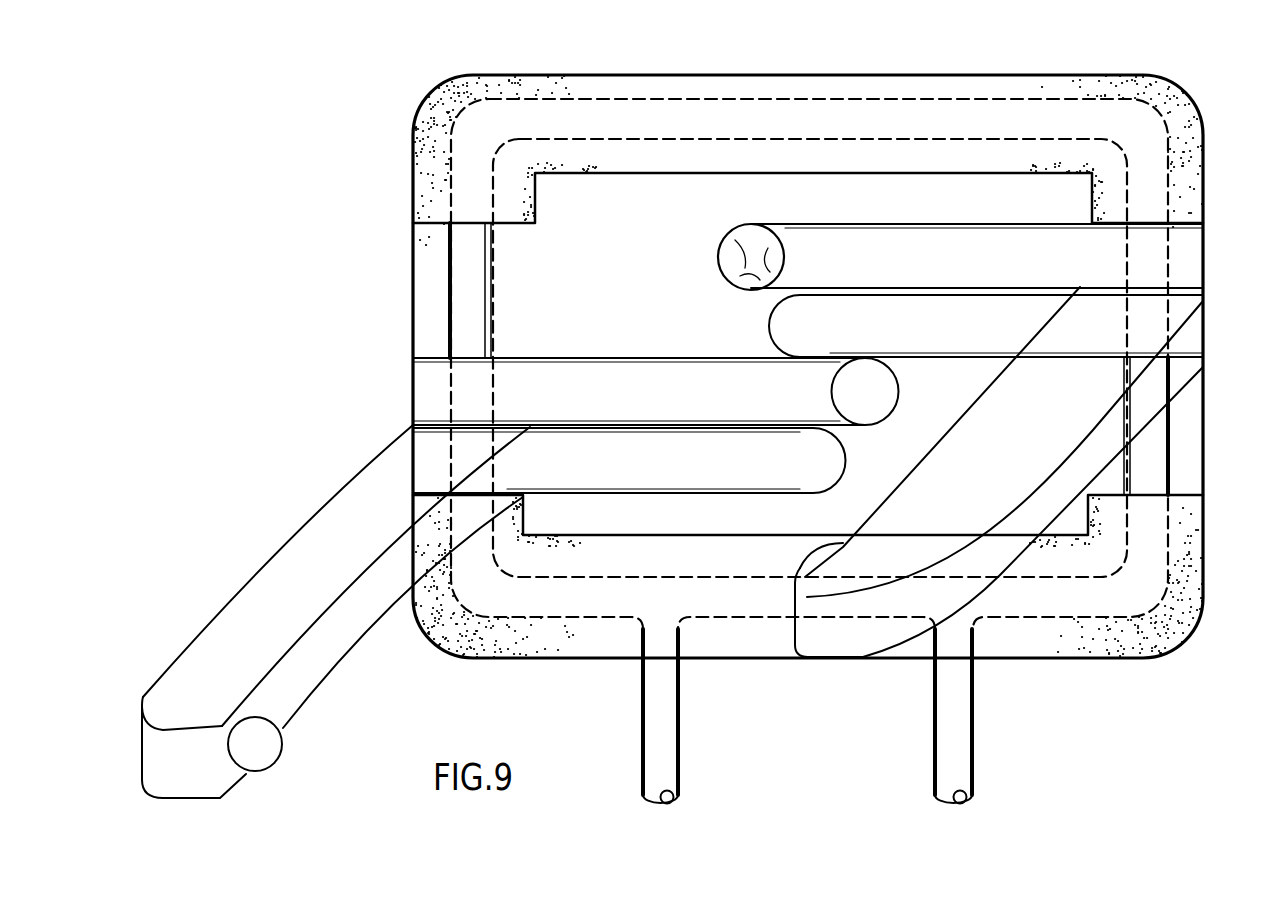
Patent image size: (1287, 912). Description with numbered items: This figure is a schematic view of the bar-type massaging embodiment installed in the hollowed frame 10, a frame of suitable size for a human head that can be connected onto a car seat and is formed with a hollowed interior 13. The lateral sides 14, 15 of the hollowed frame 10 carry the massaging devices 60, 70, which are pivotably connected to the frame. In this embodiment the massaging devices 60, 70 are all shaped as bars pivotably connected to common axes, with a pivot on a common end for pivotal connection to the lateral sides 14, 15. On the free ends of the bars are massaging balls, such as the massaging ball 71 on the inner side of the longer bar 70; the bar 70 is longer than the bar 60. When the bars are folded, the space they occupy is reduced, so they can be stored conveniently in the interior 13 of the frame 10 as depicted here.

The hollowed frame 10 is at (703, 92).
The hollowed interior 13 is at (587, 207).
The lateral side 14 is at (413, 166).
The lateral side 15 is at (1183, 156).
The massaging device 60 is at (1003, 338).
The massaging device 70 is at (927, 250).
The massaging ball 71 is at (760, 250).